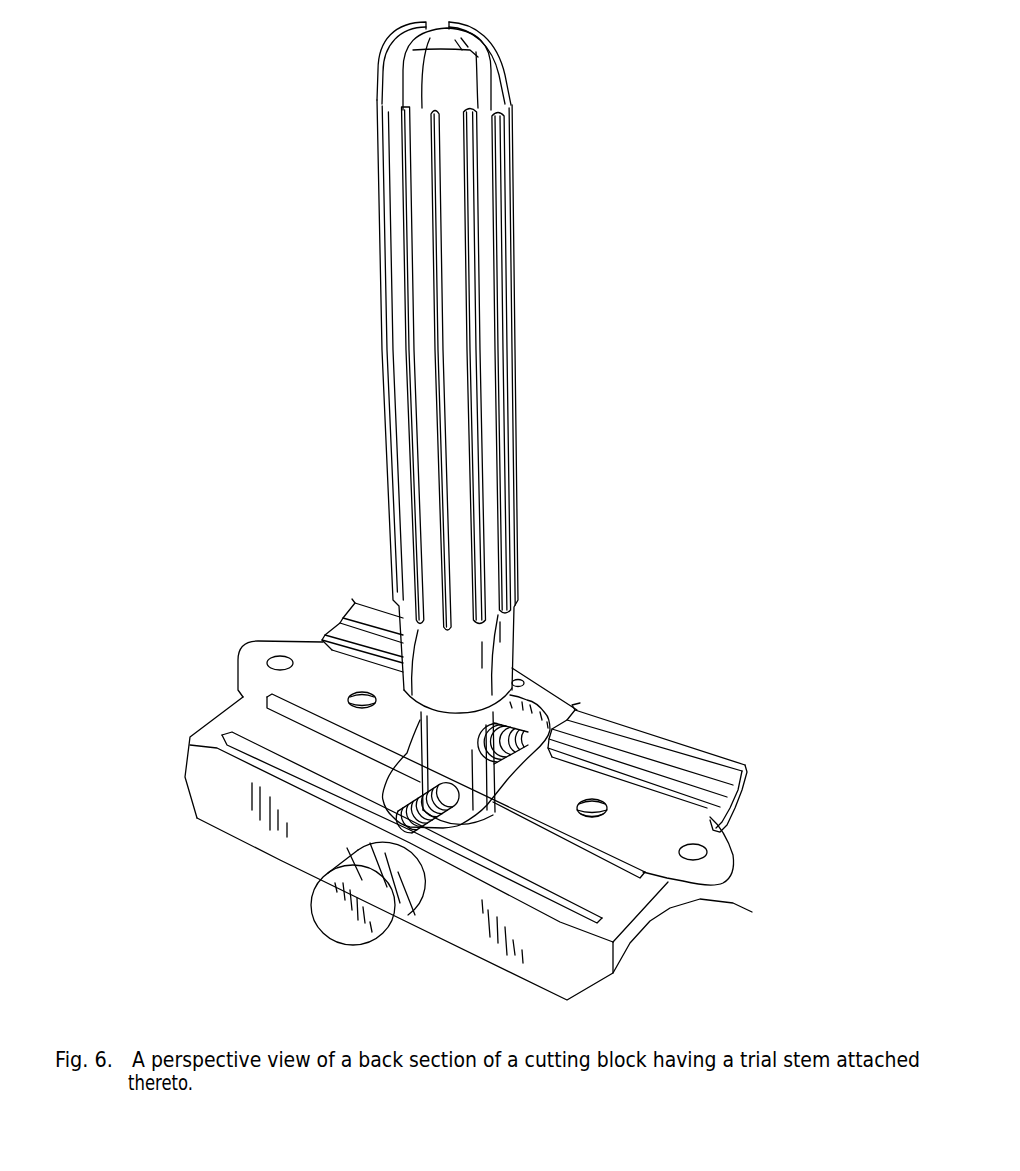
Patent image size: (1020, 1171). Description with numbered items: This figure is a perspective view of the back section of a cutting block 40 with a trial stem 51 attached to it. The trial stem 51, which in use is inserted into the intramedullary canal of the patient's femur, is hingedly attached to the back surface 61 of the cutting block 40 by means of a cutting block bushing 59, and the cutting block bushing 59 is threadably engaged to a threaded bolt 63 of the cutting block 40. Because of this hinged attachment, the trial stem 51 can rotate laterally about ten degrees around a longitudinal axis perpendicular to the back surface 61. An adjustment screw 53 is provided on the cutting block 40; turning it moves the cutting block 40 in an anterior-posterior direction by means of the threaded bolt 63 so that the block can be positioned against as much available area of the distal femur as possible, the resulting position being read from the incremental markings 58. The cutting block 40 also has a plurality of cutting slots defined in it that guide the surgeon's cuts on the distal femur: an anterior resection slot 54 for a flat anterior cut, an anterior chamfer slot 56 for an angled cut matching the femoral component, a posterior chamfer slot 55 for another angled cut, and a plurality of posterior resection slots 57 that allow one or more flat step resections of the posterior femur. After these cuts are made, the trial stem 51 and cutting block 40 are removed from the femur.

The cutting block 40 is at (610, 897).
The trial stem 51 is at (398, 341).
The adjustment screw 53 is at (340, 905).
The anterior resection slot 54 is at (223, 745).
The posterior chamfer slot 55 is at (335, 737).
The anterior chamfer slot 56 is at (332, 650).
The posterior resection slots 57 is at (795, 777).
The incremental markings 58 is at (727, 827).
The cutting block bushing 59 is at (437, 749).
The back surface 61 is at (347, 767).
The threaded bolt 63 is at (553, 724).